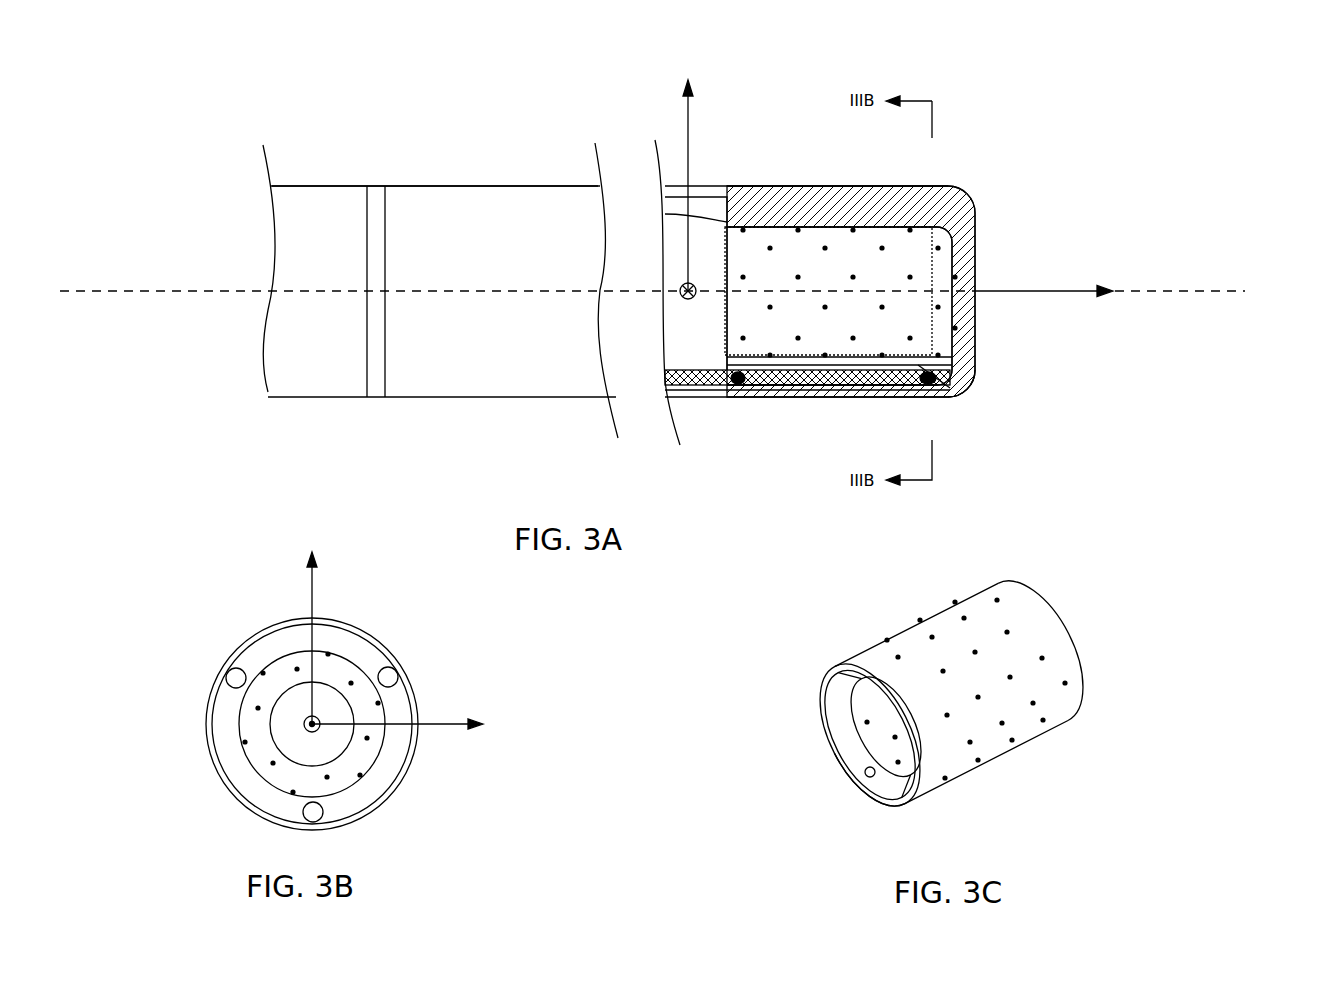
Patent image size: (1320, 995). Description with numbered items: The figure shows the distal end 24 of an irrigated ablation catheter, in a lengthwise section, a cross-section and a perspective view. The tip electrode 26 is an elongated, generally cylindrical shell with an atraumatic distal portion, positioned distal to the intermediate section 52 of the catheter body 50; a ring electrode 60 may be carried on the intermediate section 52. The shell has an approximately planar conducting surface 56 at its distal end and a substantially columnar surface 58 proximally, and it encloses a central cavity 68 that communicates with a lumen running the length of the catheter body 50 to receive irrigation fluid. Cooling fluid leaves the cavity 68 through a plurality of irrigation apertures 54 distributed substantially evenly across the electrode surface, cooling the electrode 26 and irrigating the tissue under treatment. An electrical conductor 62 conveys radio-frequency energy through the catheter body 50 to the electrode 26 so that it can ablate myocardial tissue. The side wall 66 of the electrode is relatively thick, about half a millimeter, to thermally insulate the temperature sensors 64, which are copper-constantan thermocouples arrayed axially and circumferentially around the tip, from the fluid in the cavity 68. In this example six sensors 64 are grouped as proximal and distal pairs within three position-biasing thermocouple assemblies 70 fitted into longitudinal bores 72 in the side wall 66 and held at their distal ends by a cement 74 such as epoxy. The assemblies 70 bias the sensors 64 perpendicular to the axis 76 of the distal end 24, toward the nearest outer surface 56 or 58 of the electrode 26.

In FIG. 3A, the distal end 24 is at (470, 97).
In FIG. 3A, the tip electrode 26 is at (767, 186).
In FIG. 3B, the tip electrode 26 is at (367, 638).
In FIG. 3C, the tip electrode 26 is at (900, 633).
In FIG. 3A, the catheter body 50 is at (325, 397).
In FIG. 3A, the intermediate section 52 is at (320, 186).
In FIG. 3A, the irrigation apertures 54 is at (825, 308).
In FIG. 3B, the irrigation apertures 54 is at (292, 792).
In FIG. 3C, the irrigation apertures 54 is at (1007, 632).
In FIG. 3A, the planar conducting surface 56 is at (975, 238).
In FIG. 3A, the columnar surface 58 is at (685, 395).
In FIG. 3C, the columnar surface 58 is at (905, 800).
In FIG. 3A, the ring electrode 60 is at (373, 186).
In FIG. 3A, the electrical conductor 62 is at (712, 222).
In FIG. 3A, the temperature sensors 64 is at (745, 388).
In FIG. 3A, the side wall 66 is at (822, 205).
In FIG. 3B, the side wall 66 is at (403, 705).
In FIG. 3C, the side wall 66 is at (838, 722).
In FIG. 3B, the central cavity 68 is at (298, 758).
In FIG. 3A, the position-biasing thermocouple assemblies 70 is at (833, 385).
In FIG. 3B, the longitudinal bores 72 is at (395, 672).
In FIG. 3C, the longitudinal bores 72 is at (866, 773).
In FIG. 3A, the cement 74 is at (957, 395).
In FIG. 3A, the axis 76 is at (90, 293).